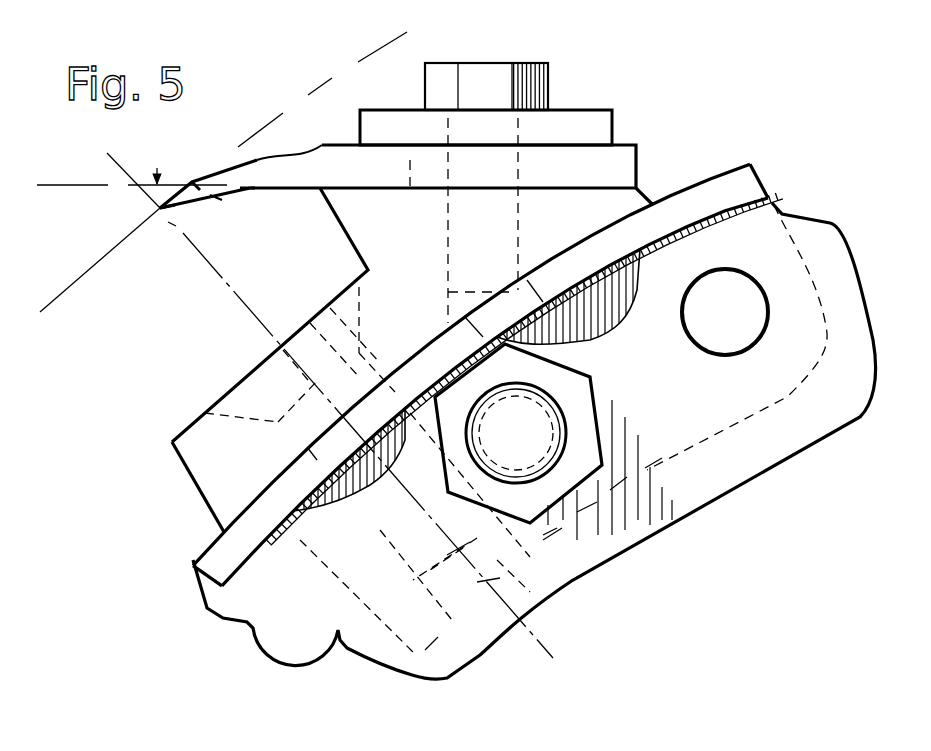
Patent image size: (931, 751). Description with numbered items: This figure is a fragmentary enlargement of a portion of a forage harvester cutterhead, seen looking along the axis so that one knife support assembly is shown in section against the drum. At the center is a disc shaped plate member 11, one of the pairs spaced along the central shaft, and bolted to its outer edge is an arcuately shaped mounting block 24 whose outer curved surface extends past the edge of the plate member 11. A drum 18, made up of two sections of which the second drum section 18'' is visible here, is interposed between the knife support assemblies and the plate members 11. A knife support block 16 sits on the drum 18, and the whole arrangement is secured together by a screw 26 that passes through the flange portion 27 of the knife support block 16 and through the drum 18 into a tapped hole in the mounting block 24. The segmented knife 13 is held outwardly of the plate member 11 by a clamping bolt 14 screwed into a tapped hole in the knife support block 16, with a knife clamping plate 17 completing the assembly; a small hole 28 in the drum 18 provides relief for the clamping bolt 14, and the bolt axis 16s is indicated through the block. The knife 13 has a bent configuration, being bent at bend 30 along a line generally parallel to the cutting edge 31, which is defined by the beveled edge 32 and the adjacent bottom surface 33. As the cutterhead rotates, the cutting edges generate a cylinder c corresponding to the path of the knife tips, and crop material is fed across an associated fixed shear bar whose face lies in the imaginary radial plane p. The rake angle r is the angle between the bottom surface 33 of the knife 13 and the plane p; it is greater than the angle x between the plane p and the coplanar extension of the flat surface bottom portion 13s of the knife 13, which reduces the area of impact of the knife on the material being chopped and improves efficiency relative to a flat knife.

The disc shaped plate member 11 is at (746, 489).
The segmented knife 13 is at (345, 147).
The flat surface bottom portion of knife 13s is at (494, 188).
The clamping bolt 14 is at (548, 82).
The knife support block 16 is at (348, 235).
The knife holder hole axis 16s is at (517, 188).
The knife clamping plate 17 is at (403, 110).
The drum 18 is at (510, 332).
The second drum section 18'' is at (581, 297).
The mounting block 24 is at (582, 308).
The screw 26 is at (500, 578).
The flange portion 27 is at (185, 427).
The small hole 28 is at (478, 320).
The bend 30 is at (247, 187).
The cutting edge 31 is at (150, 207).
The beveled edge 32 is at (190, 190).
The bottom surface 33 is at (217, 198).
The cylinder c is at (372, 50).
The angle x is at (132, 187).
The rake angle r is at (160, 247).
The imaginary radial plane p is at (568, 675).